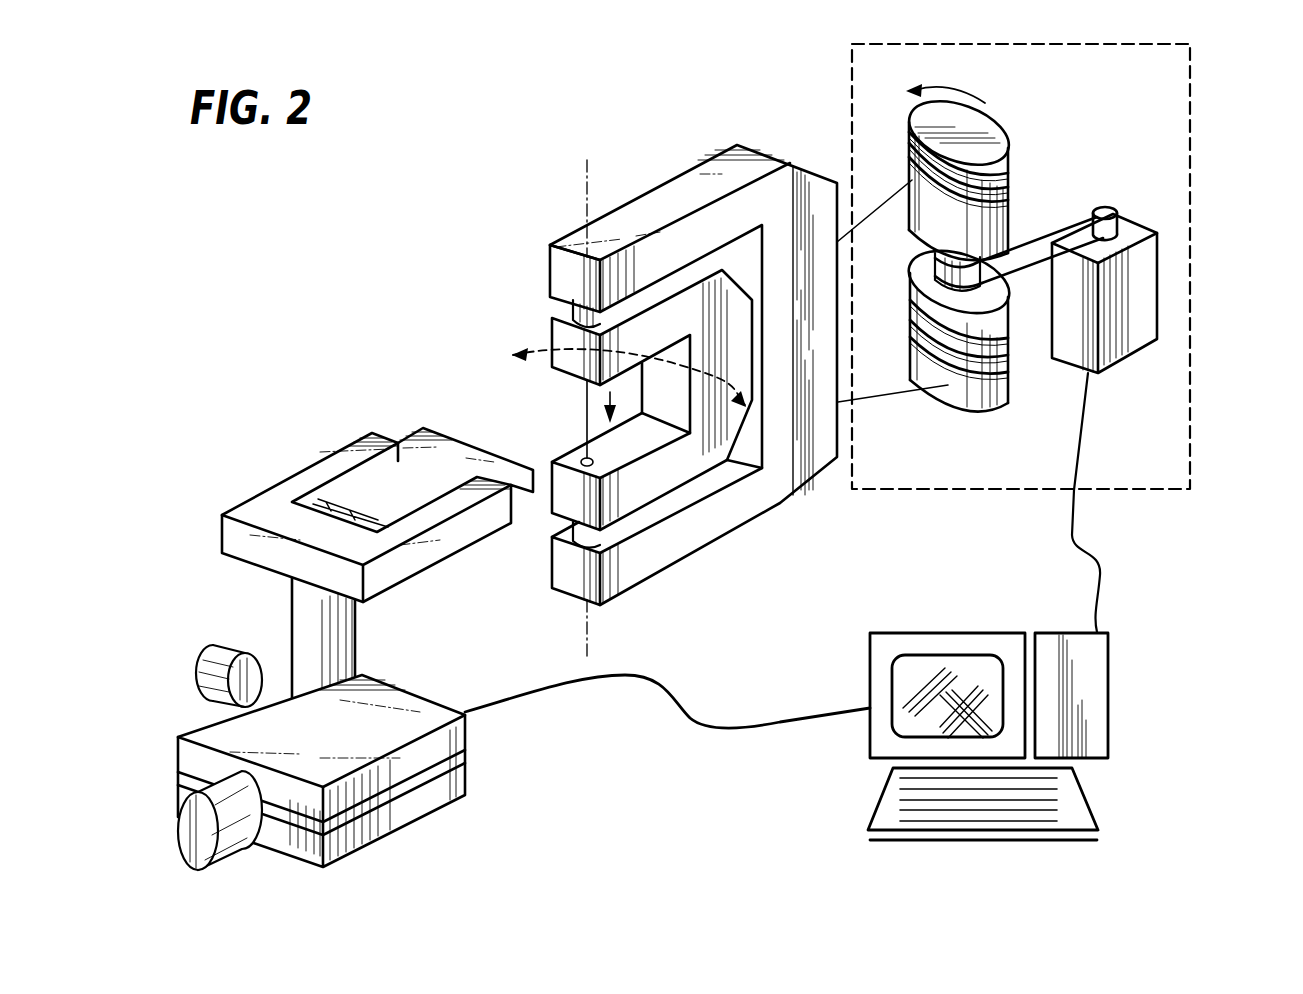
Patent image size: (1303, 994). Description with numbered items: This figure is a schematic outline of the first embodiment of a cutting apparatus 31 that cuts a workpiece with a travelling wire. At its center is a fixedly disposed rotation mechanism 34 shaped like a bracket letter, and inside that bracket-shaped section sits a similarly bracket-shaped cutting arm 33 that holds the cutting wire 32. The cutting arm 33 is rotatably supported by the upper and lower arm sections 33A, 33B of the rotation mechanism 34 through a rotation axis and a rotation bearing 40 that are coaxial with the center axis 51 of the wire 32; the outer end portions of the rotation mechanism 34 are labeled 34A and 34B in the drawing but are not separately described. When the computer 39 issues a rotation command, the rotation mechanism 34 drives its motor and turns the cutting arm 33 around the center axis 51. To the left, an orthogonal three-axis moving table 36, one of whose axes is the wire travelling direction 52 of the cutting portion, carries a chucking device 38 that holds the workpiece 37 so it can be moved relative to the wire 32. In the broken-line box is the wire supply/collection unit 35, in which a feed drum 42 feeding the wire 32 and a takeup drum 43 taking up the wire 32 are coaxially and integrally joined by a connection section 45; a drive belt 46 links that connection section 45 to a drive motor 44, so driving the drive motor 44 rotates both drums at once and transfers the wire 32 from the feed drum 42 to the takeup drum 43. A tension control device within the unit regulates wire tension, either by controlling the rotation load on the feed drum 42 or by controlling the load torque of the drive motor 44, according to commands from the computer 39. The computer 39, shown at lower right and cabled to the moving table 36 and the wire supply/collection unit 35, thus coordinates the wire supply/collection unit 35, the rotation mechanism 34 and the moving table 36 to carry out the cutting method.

The cutting apparatus 31 is at (718, 89).
The cutting wire 32 is at (587, 412).
The cutting arm 33 is at (615, 416).
The upper arm section 33A is at (553, 333).
The lower arm section 33B is at (568, 494).
The rotation mechanism 34 is at (640, 379).
The upper frame arm 34A is at (552, 268).
The lower frame arm 34B is at (642, 570).
The wire supply/collection unit 35 is at (1059, 266).
The orthogonal three-axis moving table 36 is at (410, 803).
The workpiece 37 is at (416, 440).
The chucking device 38 is at (377, 556).
The computer 39 is at (1108, 697).
The rotation bearing 40 is at (573, 312).
The feed drum 42 is at (985, 122).
The takeup drum 43 is at (975, 405).
The drive motor 44 is at (1137, 345).
The connection section 45 is at (932, 263).
The drive belt 46 is at (1027, 268).
The center axis 51 is at (587, 200).
The wire travelling direction 52 is at (610, 392).